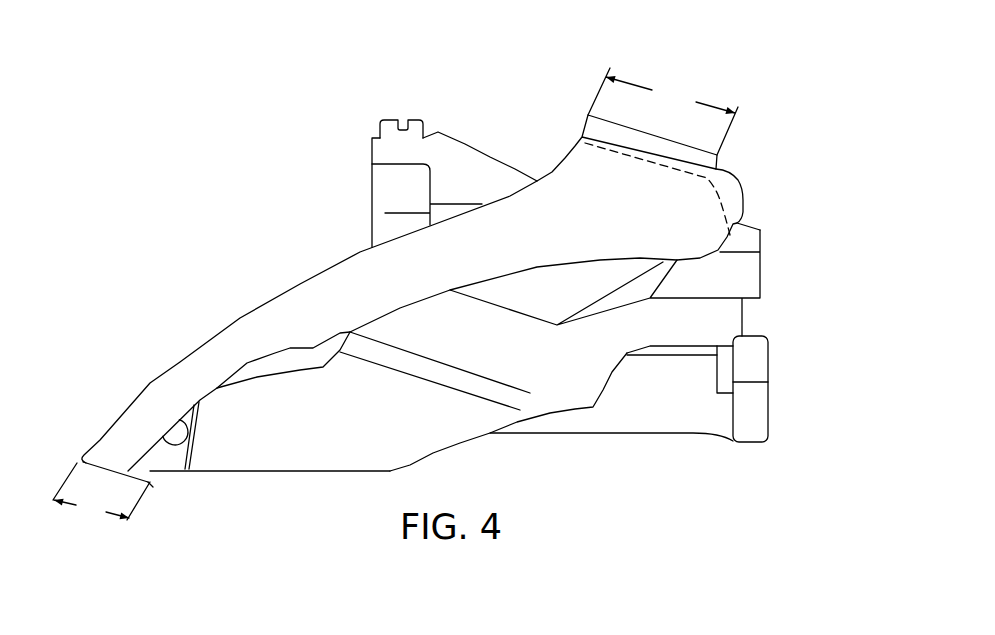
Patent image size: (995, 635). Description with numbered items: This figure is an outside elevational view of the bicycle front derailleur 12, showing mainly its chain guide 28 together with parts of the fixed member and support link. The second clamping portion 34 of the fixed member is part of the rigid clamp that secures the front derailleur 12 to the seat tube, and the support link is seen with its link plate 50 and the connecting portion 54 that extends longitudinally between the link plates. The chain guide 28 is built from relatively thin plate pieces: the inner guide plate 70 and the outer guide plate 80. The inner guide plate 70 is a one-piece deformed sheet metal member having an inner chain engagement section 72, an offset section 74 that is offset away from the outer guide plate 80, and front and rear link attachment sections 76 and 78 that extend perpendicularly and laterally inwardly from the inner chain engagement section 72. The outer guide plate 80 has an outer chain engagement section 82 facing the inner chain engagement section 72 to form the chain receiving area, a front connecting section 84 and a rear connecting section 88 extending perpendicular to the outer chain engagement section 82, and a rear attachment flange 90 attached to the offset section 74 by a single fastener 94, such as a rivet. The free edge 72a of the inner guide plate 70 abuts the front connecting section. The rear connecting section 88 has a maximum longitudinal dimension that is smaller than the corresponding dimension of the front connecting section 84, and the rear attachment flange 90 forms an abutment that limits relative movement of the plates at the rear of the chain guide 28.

The bicycle front derailleur 12 is at (648, 63).
The chain guide 28 is at (141, 362).
The second clamping portion 34 is at (753, 407).
The link plate 50 is at (720, 372).
The connecting portion 54 is at (652, 350).
The inner guide plate 70 is at (283, 474).
The inner chain engagement section 72 is at (548, 390).
The free edge 72a is at (603, 135).
The offset section 74 is at (178, 467).
The front link attachment section 76 is at (760, 262).
The rear link attachment section 78 is at (392, 190).
The outer guide plate 80 is at (241, 313).
The outer chain engagement section 82 is at (312, 315).
The front connecting section 84 is at (716, 163).
The rear connecting section 88 is at (151, 482).
The rear attachment flange 90 is at (161, 453).
The fastener 94 is at (173, 432).